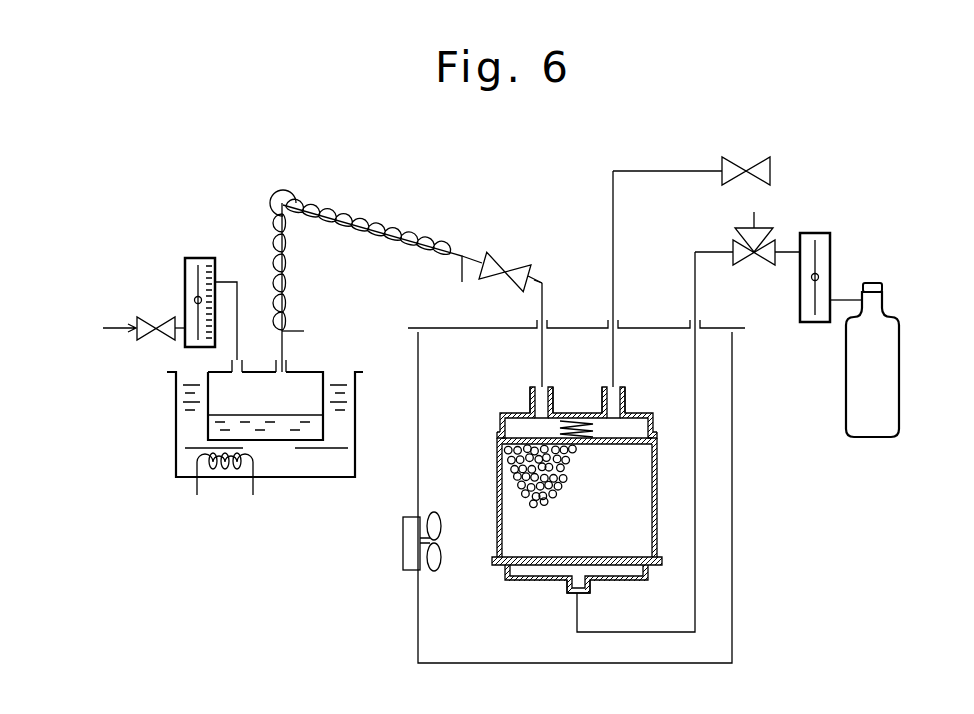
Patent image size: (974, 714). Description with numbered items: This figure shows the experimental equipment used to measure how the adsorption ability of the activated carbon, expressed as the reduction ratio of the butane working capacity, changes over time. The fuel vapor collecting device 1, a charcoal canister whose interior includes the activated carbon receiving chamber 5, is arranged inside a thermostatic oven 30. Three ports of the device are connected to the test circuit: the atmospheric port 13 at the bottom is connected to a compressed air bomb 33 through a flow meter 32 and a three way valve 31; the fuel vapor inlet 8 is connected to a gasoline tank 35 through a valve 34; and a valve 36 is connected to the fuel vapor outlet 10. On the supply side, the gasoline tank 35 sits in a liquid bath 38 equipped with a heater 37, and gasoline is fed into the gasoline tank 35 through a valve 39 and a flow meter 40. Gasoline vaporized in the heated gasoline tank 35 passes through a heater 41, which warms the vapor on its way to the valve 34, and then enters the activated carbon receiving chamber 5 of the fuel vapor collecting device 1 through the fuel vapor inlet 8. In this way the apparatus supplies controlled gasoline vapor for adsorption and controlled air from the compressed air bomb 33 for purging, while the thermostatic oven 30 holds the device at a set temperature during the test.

The fuel vapor collecting device 1 is at (591, 499).
The activated carbon receiving chamber 5 is at (645, 505).
The fuel vapor inlet 8 is at (533, 402).
The fuel vapor outlet 10 is at (620, 398).
The atmospheric port 13 is at (572, 598).
The thermostatic oven 30 is at (734, 494).
The three way valve 31 is at (754, 265).
The flow meter 32 is at (830, 240).
The compressed air bomb 33 is at (895, 385).
The valve 34 is at (512, 264).
The gasoline tank 35 is at (318, 372).
The valve 36 is at (771, 166).
The heater 37 is at (237, 472).
The liquid bath 38 is at (176, 444).
The valve 39 is at (146, 318).
The flow meter 40 is at (213, 258).
The heater 41 is at (301, 206).